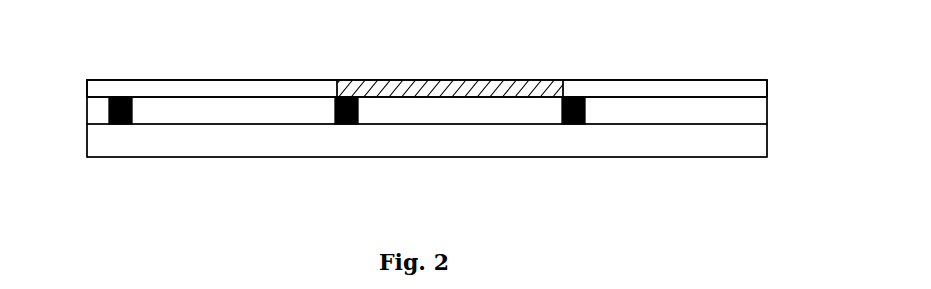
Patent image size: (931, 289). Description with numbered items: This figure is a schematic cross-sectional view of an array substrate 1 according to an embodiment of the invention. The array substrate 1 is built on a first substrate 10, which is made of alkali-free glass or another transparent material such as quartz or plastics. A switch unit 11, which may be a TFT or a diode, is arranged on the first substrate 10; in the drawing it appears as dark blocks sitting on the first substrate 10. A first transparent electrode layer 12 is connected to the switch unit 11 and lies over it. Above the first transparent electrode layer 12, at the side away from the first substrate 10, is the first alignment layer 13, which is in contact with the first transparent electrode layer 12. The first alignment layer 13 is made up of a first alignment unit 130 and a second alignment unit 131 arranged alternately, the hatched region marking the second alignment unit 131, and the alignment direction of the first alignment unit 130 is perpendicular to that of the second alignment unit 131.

The array substrate 1 is at (52, 96).
The first substrate 10 is at (762, 148).
The switch unit 11 is at (570, 124).
The first transparent electrode layer 12 is at (762, 115).
The first alignment layer 13 is at (763, 79).
The first alignment unit 130 is at (149, 90).
The second alignment unit 131 is at (435, 88).